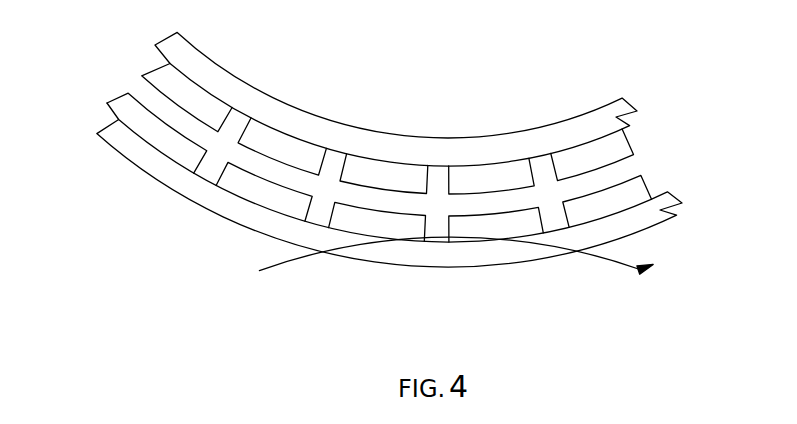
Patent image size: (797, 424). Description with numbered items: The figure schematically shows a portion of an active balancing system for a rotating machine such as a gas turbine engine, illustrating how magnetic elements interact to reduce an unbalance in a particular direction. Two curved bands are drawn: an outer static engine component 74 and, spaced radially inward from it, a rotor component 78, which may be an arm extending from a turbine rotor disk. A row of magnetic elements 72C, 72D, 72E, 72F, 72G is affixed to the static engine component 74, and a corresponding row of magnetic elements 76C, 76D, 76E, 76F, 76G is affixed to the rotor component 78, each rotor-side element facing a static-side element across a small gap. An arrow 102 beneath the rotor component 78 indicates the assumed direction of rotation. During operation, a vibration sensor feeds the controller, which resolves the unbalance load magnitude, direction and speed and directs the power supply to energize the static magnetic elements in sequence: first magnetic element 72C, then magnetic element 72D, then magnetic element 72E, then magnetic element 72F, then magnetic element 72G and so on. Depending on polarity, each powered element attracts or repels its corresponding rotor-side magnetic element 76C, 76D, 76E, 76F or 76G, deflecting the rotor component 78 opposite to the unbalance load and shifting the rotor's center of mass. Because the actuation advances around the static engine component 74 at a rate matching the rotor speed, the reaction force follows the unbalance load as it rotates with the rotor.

The static engine component 74 is at (447, 140).
The magnetic element 72C is at (190, 98).
The magnetic element 72D is at (282, 152).
The magnetic element 72E is at (380, 170).
The magnetic element 72F is at (495, 182).
The magnetic element 72G is at (590, 157).
The rotor component 78 is at (499, 267).
The magnetic element 76C is at (110, 105).
The magnetic element 76D is at (227, 172).
The magnetic element 76E is at (334, 213).
The magnetic element 76F is at (453, 228).
The magnetic element 76G is at (600, 143).
The arrow 102 is at (570, 289).